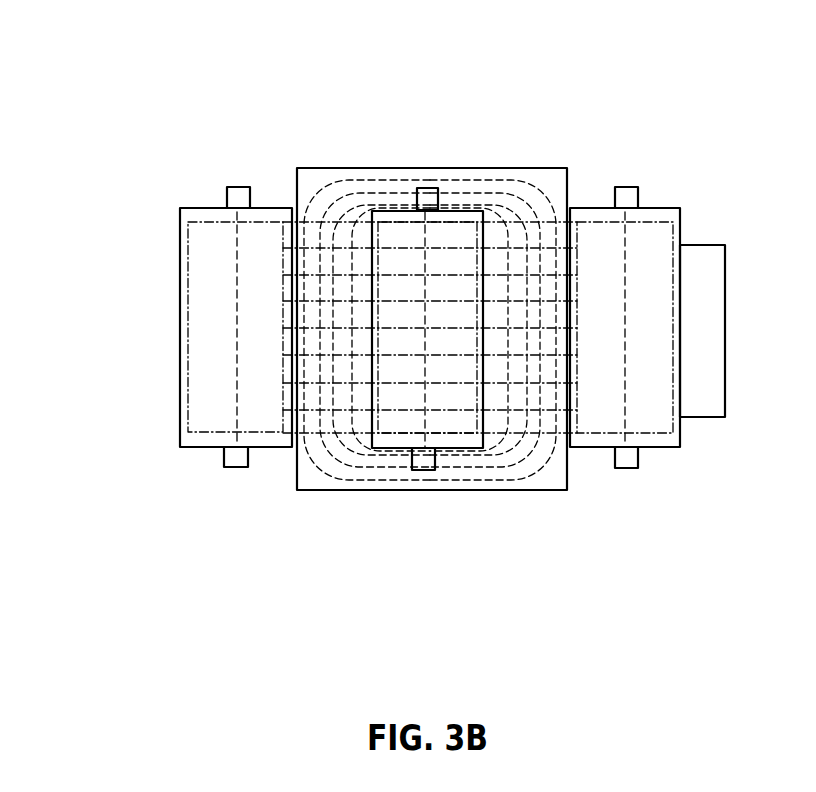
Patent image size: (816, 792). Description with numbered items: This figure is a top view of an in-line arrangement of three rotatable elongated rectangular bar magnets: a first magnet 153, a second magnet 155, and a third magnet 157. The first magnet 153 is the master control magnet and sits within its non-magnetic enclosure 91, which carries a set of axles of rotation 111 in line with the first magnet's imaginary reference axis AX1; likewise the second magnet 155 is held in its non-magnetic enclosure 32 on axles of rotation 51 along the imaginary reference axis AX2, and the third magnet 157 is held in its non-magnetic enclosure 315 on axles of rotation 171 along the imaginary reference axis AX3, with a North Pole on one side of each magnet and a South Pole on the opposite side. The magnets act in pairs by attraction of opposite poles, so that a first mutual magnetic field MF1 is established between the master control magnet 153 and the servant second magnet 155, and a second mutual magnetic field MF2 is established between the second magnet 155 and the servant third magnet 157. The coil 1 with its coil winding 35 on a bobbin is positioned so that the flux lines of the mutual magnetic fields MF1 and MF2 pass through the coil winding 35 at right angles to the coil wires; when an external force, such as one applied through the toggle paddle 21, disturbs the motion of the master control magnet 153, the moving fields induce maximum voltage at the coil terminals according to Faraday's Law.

The coil 1 is at (475, 320).
The toggle paddle 21 is at (710, 383).
The non-magnetic enclosure 32 is at (403, 319).
The coil winding 35 is at (313, 440).
The axle of rotation 51 is at (440, 192).
The non-magnetic enclosure 91 is at (684, 293).
The axle of rotation 111 is at (630, 193).
The first magnet 153 is at (675, 240).
The second magnet 155 is at (397, 433).
The third magnet 157 is at (188, 268).
The axle of rotation 171 is at (240, 195).
The non-magnetic enclosure 315 is at (169, 323).
The imaginary reference axis AX1 is at (627, 387).
The imaginary reference axis AX2 is at (425, 385).
The imaginary reference axis AX3 is at (237, 363).
The first mutual magnetic field MF1 is at (545, 215).
The second mutual magnetic field MF2 is at (320, 220).